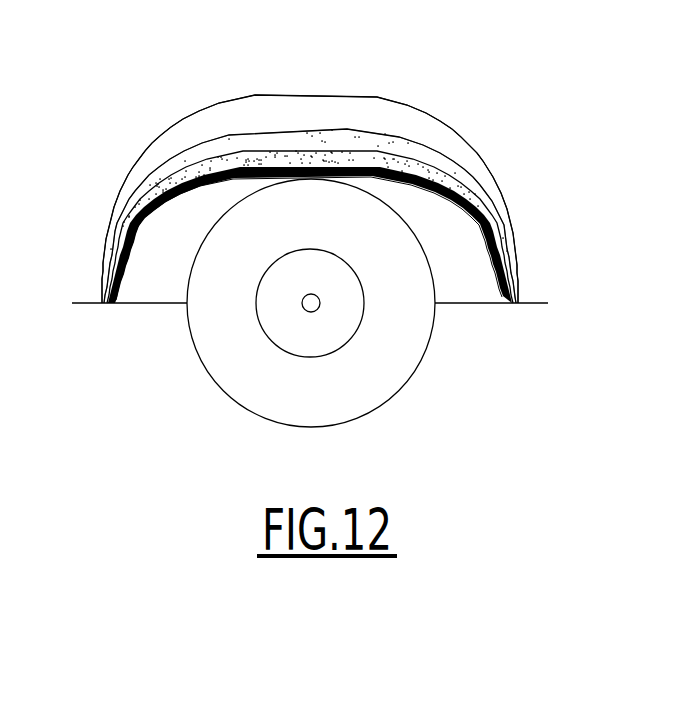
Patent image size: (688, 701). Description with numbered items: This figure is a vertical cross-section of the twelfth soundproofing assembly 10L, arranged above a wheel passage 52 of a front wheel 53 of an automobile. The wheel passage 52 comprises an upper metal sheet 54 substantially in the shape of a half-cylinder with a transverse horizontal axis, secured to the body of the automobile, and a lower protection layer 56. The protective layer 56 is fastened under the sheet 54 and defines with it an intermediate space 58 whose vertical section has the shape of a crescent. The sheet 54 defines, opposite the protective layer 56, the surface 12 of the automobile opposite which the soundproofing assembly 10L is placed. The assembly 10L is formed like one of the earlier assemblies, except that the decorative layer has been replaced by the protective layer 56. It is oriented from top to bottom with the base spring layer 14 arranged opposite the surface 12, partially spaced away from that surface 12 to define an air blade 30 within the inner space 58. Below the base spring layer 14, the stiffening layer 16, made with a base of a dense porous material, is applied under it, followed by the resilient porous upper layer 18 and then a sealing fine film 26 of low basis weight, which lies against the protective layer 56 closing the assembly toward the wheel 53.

The twelfth soundproofing assembly 10L is at (490, 300).
The surface 12 is at (290, 93).
The base spring layer 14 is at (441, 173).
The stiffening layer 16 is at (465, 200).
The resilient porous upper layer 18 is at (483, 215).
The sealing fine film 26 is at (470, 232).
The air blade 30 is at (322, 108).
The wheel passage 52 is at (138, 154).
The front wheel 53 is at (233, 378).
The upper metal sheet 54 is at (226, 101).
The lower protection layer 56 is at (144, 244).
The intermediate space 58 is at (383, 117).